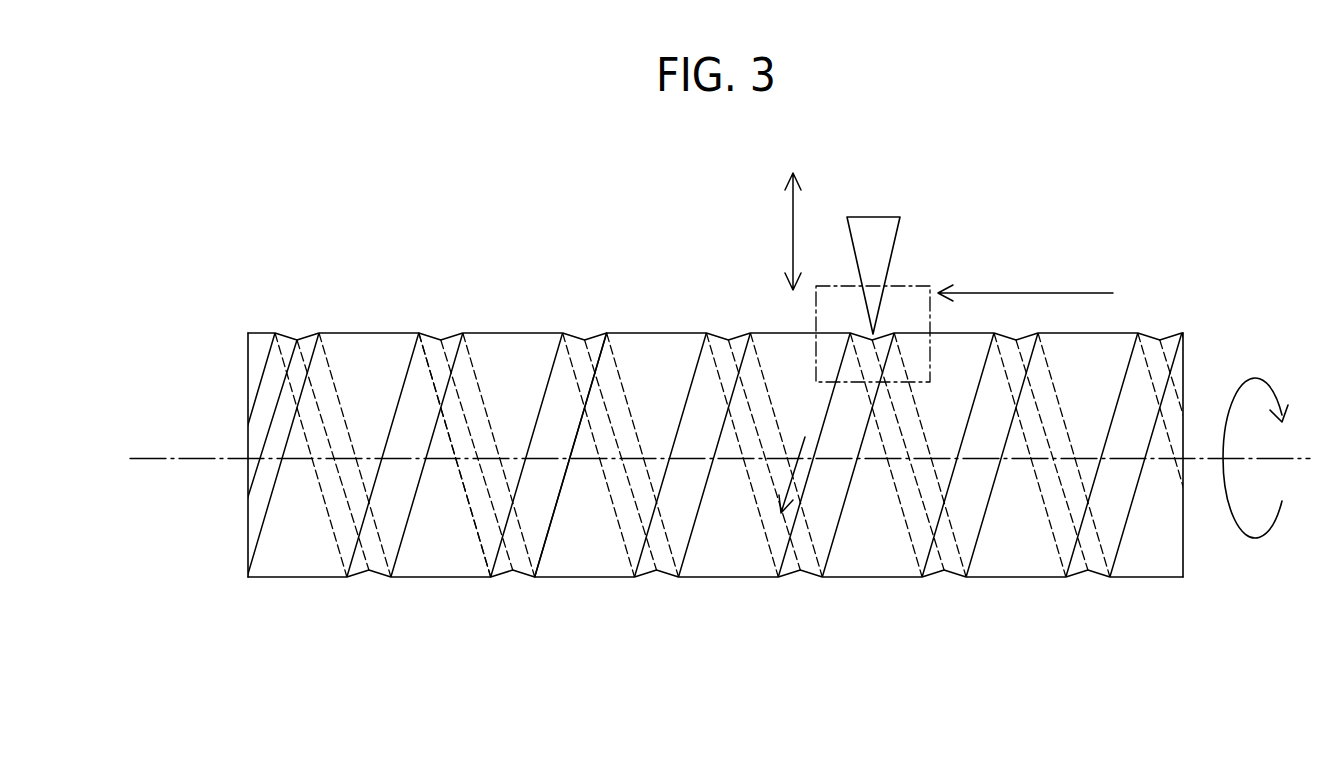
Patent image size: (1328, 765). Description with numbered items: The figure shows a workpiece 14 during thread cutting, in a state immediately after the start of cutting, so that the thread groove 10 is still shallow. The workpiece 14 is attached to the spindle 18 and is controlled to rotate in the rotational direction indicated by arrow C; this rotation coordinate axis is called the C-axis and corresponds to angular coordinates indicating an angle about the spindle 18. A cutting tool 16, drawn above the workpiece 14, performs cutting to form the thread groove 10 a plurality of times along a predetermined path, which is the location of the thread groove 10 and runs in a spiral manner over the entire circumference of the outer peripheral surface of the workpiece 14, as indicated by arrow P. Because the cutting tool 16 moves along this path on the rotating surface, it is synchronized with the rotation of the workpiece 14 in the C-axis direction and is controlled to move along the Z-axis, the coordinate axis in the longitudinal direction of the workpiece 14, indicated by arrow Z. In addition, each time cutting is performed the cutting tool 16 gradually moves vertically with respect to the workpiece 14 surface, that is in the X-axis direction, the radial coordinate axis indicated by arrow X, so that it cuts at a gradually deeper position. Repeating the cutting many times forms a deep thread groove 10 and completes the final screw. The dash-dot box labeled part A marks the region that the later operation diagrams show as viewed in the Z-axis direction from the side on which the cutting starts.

The thread groove 10 is at (583, 340).
The workpiece 14 is at (290, 578).
The cutting tool 16 is at (875, 217).
The spindle 18 is at (190, 457).
The part A is at (816, 328).
The X-axis X is at (788, 223).
The Z-axis Z is at (1027, 293).
The arrow P is at (806, 463).
The rotational direction C is at (1240, 536).